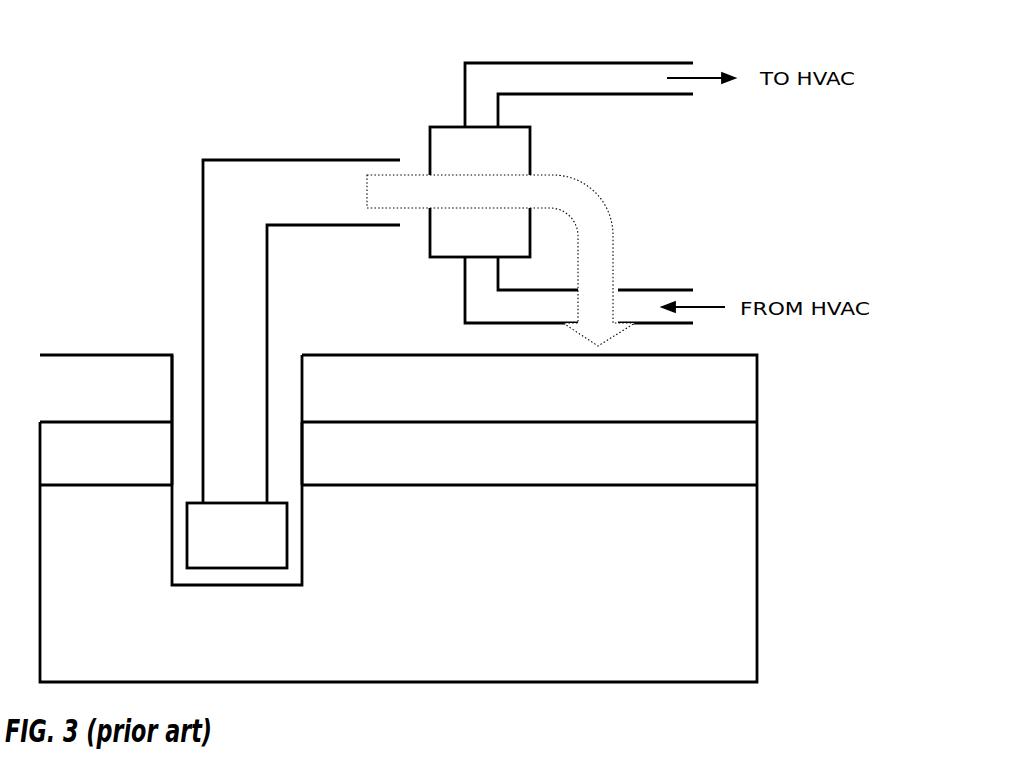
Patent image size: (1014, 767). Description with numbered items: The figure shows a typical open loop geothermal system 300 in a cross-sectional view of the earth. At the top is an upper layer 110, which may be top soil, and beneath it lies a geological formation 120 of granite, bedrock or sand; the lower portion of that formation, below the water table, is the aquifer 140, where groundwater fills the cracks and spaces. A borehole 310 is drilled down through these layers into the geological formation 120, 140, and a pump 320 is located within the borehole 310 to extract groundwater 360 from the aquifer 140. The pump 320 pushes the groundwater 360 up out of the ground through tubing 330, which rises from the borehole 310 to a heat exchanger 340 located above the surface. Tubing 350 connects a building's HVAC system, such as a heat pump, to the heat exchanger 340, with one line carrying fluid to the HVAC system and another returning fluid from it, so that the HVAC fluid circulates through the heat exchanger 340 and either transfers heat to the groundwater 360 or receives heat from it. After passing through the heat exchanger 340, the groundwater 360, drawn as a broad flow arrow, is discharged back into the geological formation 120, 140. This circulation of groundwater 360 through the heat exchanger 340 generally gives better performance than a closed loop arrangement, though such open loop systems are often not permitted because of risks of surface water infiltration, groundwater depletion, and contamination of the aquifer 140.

The open loop geothermal system 300 is at (237, 111).
The upper layer 110 is at (732, 390).
The geological formation 120 is at (725, 447).
The aquifer 140 is at (757, 487).
The borehole 310 is at (298, 562).
The pump 320 is at (217, 536).
The tubing 330 is at (203, 300).
The heat exchanger 340 is at (530, 163).
The tubing 350 is at (670, 290).
The groundwater 360 is at (597, 230).